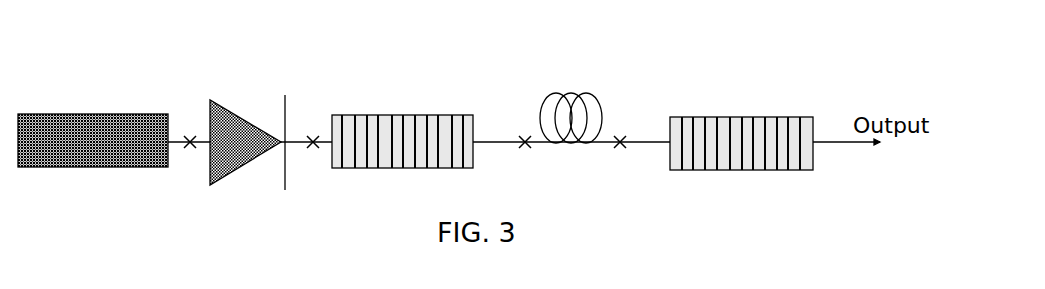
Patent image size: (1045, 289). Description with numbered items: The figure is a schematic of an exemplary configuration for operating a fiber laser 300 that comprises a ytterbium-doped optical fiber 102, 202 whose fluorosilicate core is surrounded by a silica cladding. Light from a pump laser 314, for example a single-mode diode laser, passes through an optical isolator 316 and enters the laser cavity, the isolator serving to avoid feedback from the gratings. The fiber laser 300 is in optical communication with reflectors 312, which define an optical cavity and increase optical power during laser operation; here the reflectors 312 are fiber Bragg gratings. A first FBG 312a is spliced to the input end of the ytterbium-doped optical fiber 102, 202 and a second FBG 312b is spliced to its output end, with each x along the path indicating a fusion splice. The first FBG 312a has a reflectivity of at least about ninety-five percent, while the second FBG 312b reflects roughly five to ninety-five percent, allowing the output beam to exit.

The fiber laser 300 is at (305, 40).
The pump laser 314 is at (76, 152).
The optical isolator 316 is at (222, 152).
The reflectors 312 is at (572, 113).
The first FBG 312a is at (398, 115).
The second FBG 312b is at (728, 117).
The ytterbium-doped optical fiber 102 is at (571, 72).
The ytterbium-doped optical fiber 202 is at (566, 86).